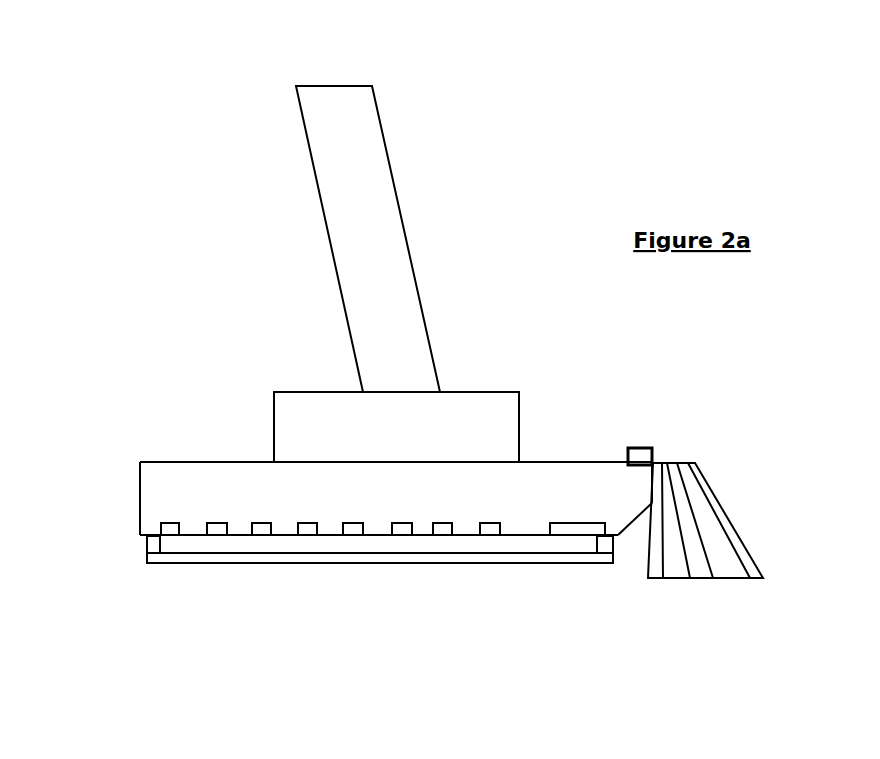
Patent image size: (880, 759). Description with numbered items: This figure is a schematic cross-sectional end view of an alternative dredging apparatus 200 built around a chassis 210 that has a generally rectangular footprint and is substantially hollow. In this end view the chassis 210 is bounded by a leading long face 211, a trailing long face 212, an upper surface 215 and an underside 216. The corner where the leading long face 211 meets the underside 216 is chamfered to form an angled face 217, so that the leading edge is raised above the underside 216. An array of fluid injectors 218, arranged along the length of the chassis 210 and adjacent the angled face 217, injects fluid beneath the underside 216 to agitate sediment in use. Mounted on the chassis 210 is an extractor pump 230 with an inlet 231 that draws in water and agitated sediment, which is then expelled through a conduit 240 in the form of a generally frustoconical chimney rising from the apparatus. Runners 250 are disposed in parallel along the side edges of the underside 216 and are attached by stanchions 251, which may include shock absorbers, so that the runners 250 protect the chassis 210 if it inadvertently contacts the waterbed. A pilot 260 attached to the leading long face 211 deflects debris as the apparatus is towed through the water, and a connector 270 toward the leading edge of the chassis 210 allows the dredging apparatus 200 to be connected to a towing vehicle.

The dredging apparatus 200 is at (203, 263).
The chassis 210 is at (543, 455).
The leading long face 211 is at (650, 487).
The trailing long face 212 is at (138, 510).
The upper surface 215 is at (564, 462).
The underside 216 is at (530, 535).
The angled face 217 is at (635, 520).
The fluid injectors 218 is at (307, 530).
The extractor pump 230 is at (318, 432).
The inlet 231 is at (577, 535).
The conduit 240 is at (378, 230).
The runners 250 is at (228, 563).
The stanchions 251 is at (153, 547).
The pilot 260 is at (727, 512).
The connector 270 is at (652, 450).